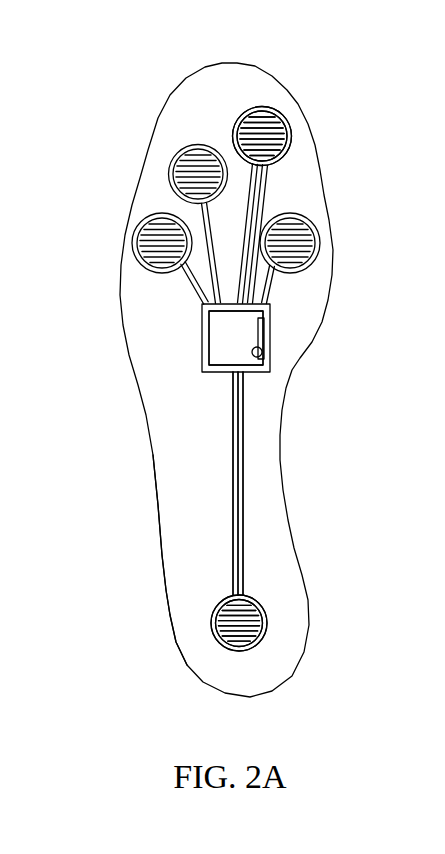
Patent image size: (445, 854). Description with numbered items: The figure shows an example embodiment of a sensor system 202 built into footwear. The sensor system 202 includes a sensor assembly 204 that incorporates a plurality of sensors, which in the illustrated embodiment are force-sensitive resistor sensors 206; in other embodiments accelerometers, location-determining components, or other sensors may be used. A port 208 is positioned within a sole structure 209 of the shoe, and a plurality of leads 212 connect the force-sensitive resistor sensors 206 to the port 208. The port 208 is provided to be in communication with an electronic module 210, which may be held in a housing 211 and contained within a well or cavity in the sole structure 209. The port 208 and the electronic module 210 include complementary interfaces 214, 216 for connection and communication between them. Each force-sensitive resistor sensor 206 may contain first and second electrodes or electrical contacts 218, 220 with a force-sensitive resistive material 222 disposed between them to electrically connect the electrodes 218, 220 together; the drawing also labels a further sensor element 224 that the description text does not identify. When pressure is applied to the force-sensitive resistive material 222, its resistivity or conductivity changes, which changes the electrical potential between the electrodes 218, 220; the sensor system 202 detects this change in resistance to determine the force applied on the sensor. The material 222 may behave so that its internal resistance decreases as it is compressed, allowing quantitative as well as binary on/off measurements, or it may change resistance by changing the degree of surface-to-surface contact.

The sensor system 202 is at (195, 370).
The sensor assembly 204 is at (248, 494).
The force-sensitive resistor sensor 206 is at (182, 147).
The port 208 is at (205, 342).
The sole structure 209 is at (160, 553).
The electronic module 210 is at (243, 353).
The housing 211 is at (203, 325).
The lead 212 is at (262, 200).
The interface 214 is at (270, 334).
The interface 216 is at (263, 357).
The first electrode 218 is at (247, 120).
The second electrode 220 is at (272, 112).
The force-sensitive resistive material 222 is at (217, 600).
The sensing surface 224 is at (288, 135).